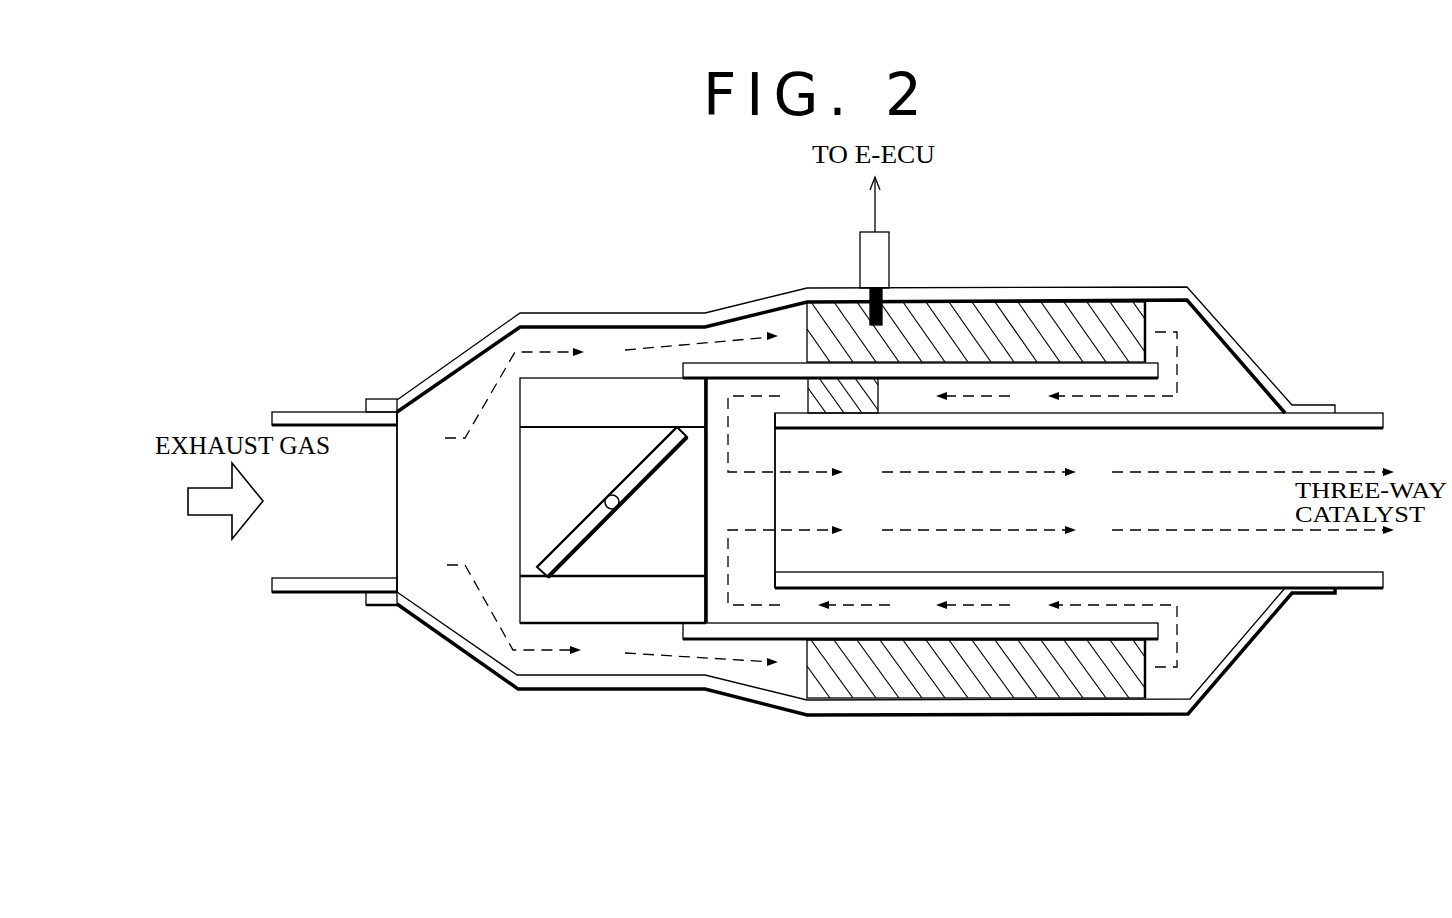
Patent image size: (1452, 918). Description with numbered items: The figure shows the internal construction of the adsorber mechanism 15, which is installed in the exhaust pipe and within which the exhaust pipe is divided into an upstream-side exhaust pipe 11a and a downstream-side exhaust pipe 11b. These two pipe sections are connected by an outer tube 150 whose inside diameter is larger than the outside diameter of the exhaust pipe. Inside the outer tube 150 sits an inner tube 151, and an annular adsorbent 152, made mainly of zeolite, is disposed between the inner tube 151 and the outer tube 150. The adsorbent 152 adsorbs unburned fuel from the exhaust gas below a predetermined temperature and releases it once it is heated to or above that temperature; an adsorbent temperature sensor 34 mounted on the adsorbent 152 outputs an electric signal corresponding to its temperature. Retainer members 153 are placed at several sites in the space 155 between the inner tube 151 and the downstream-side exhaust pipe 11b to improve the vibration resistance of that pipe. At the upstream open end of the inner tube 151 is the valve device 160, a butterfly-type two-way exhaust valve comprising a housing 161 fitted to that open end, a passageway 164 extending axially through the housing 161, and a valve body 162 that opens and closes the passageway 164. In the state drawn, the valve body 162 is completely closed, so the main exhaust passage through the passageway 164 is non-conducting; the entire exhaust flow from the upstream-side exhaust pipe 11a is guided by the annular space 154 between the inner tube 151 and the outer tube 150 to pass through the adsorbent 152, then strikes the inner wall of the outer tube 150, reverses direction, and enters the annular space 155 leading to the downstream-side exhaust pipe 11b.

The upstream-side exhaust pipe 11a is at (297, 418).
The downstream-side exhaust pipe 11b is at (1362, 418).
The adsorber mechanism 15 is at (772, 781).
The adsorbent temperature sensor 34 is at (886, 260).
The outer tube 150 is at (1035, 296).
The inner tube 151 is at (930, 633).
The annular adsorbent 152 is at (1127, 317).
The retainer members 153 is at (823, 393).
The annular space 154 is at (608, 350).
The annular space 155 is at (1032, 604).
The valve device 160 is at (547, 628).
The housing 161 is at (653, 613).
The valve body 162 is at (578, 537).
The passageway 164 is at (547, 511).